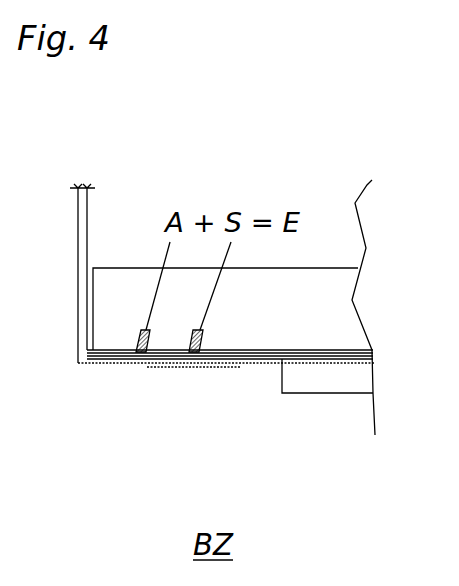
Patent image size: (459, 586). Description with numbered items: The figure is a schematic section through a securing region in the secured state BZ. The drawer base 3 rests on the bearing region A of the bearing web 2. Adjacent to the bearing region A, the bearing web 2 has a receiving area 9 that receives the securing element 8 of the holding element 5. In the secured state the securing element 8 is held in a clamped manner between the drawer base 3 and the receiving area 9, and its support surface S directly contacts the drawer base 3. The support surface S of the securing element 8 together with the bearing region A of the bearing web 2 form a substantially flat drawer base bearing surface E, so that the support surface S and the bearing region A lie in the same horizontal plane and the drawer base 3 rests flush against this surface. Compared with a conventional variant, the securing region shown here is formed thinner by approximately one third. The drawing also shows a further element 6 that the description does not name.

The bearing web 2 is at (115, 359).
The drawer base 3 is at (103, 288).
The holding element 5 is at (268, 362).
The flange section 6 is at (312, 382).
The securing element 8 is at (168, 365).
The receiving area 9 is at (207, 372).